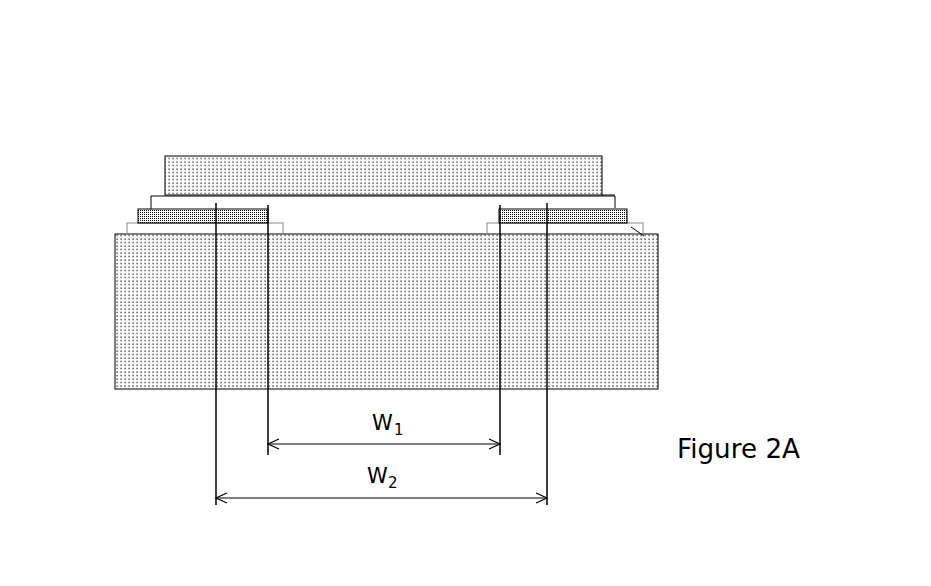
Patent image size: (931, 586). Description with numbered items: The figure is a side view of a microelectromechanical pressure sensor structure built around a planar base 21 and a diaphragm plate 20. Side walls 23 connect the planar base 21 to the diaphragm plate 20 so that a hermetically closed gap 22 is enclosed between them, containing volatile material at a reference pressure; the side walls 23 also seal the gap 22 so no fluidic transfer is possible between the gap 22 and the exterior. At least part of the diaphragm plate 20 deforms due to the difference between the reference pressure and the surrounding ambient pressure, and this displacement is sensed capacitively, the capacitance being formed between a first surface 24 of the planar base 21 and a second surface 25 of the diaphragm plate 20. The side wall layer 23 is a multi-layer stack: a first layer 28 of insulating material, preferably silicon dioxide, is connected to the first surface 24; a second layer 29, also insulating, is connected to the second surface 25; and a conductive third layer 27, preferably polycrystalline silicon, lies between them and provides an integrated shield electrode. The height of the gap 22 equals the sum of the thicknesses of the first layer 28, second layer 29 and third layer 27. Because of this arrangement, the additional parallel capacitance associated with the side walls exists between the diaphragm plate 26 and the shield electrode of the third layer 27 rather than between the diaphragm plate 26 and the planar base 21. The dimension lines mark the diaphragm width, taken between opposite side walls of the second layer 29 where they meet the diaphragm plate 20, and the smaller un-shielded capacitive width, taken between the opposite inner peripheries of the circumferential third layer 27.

The diaphragm plate 20 is at (422, 158).
The planar base 21 is at (610, 343).
The gap 22 is at (310, 212).
The side walls 23 is at (135, 203).
The first surface 24 is at (337, 233).
The second surface 25 is at (520, 206).
The diaphragm plate 26 is at (562, 157).
The third layer 27 is at (627, 208).
The first layer 28 is at (644, 236).
The second layer 29 is at (615, 193).